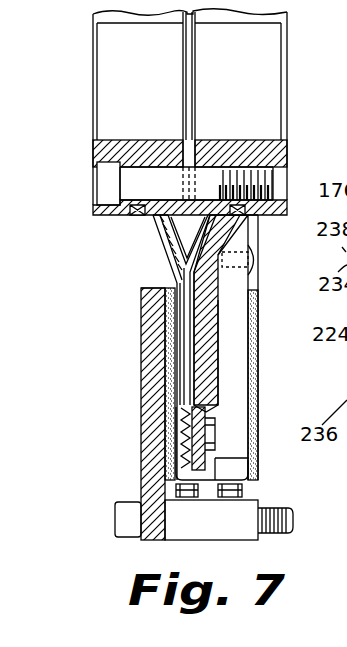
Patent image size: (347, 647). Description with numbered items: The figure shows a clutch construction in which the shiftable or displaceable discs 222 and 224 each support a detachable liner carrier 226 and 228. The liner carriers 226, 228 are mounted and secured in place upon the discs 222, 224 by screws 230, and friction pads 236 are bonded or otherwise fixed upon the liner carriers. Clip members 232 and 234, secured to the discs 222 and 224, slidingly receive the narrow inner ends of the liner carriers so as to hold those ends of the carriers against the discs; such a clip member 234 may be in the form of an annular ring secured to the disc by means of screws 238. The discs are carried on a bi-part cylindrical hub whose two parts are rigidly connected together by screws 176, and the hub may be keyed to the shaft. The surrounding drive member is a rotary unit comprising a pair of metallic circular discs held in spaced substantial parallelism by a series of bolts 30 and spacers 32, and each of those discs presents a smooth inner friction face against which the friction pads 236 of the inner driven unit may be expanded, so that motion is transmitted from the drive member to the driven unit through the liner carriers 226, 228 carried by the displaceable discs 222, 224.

The screws 176 is at (258, 196).
The clip member 232 is at (177, 282).
The screws 238 is at (252, 266).
The clip member 234 is at (252, 272).
The shiftable disc 222 is at (178, 303).
The shiftable disc 224 is at (218, 313).
The liner carrier 226 is at (170, 356).
The liner carrier 228 is at (240, 352).
The friction pads 236 is at (170, 397).
The screws 230 is at (220, 490).
The spacers 32 is at (247, 535).
The bolts 30 is at (291, 520).